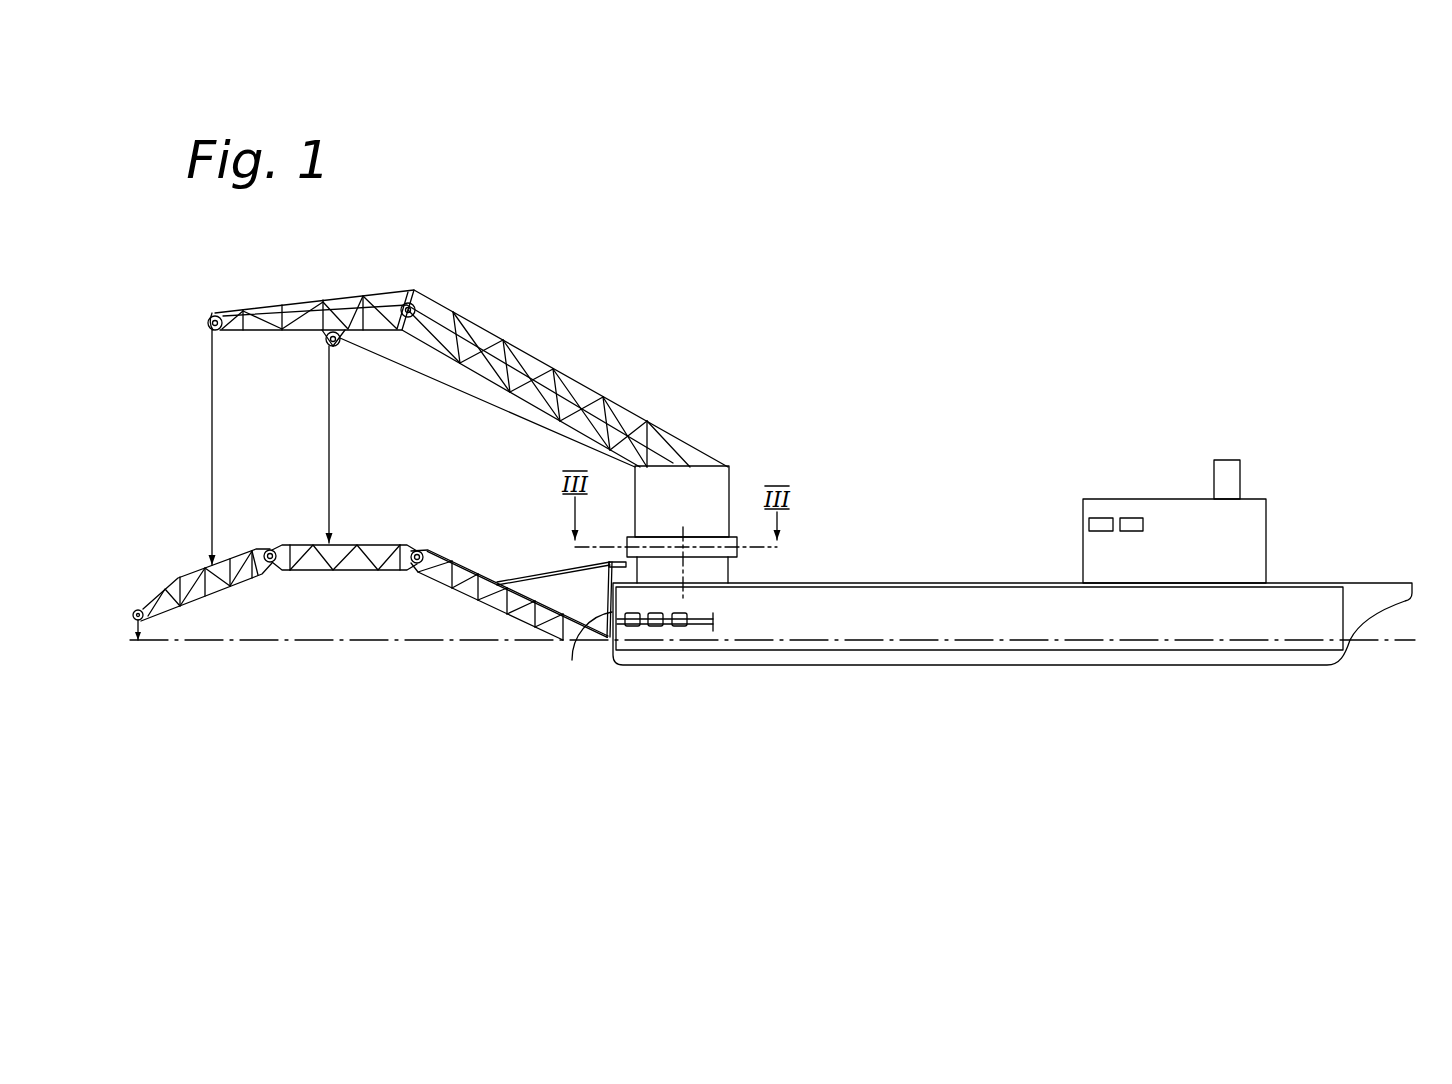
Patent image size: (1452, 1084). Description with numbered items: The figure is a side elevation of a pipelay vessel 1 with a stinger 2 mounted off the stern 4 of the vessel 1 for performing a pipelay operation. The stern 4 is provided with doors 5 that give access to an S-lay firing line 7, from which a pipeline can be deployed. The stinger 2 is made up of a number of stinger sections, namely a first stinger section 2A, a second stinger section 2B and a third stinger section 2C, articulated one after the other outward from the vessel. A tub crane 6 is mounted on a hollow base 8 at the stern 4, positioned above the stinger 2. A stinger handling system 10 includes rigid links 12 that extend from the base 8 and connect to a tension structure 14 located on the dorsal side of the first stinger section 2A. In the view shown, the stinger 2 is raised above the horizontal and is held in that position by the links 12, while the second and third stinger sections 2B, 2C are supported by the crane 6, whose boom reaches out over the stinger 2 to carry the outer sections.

The vessel 1 is at (1013, 340).
The stinger 2 is at (452, 605).
The first stinger section 2A is at (474, 571).
The second stinger section 2B is at (365, 544).
The third stinger section 2C is at (168, 582).
The stern 4 is at (608, 643).
The doors 5 is at (572, 660).
The tub crane 6 is at (729, 497).
The S-lay firing line 7 is at (665, 627).
The hollow base 8 is at (729, 573).
The stinger handling system 10 is at (742, 478).
The rigid links 12 is at (632, 565).
The tension structure 14 is at (575, 565).